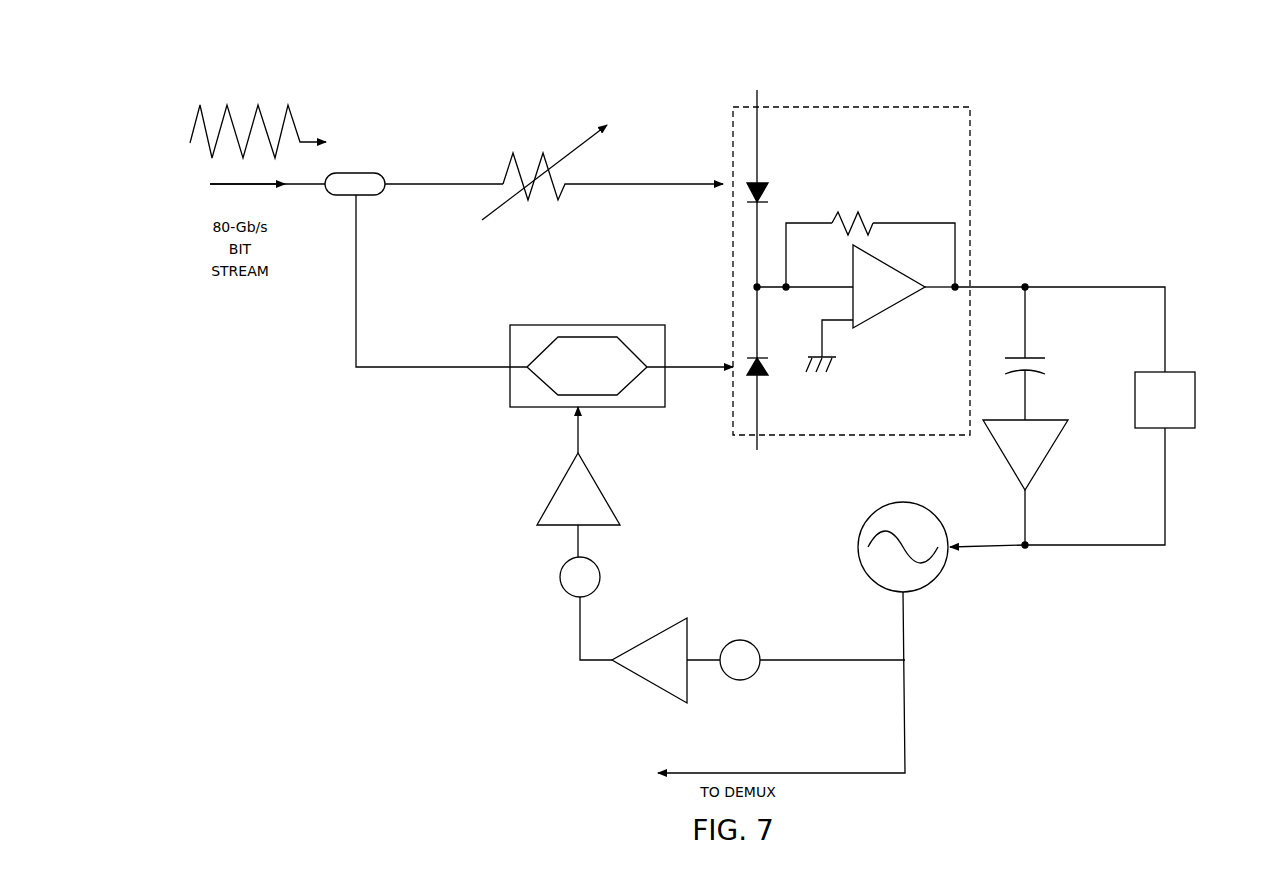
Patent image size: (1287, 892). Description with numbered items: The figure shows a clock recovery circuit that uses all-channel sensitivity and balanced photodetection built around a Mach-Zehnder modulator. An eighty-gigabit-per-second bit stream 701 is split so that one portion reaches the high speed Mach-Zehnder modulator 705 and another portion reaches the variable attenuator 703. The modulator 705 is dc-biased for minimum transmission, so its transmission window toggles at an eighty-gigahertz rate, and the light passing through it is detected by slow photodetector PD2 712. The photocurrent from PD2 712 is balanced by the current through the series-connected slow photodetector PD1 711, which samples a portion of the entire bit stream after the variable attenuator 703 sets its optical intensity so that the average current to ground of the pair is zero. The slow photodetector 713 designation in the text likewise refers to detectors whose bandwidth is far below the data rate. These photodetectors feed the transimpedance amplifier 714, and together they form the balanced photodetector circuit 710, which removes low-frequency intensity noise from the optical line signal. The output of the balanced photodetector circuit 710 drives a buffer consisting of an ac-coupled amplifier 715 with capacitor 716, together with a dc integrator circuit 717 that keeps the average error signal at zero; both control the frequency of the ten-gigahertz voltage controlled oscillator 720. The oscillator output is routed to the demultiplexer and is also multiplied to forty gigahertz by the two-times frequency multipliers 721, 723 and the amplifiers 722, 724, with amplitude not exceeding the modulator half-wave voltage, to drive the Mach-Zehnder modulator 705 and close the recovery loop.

The 80-Gb/s bit stream 701 is at (196, 123).
The variable attenuator 703 is at (500, 148).
The Mach-Zehnder modulator 705 is at (535, 410).
The balanced photodetector circuit 710 is at (975, 172).
The photodetector (PD1) 711 is at (778, 183).
The photodetector (PD2) 712 is at (780, 385).
The slow photodetector 713 is at (860, 190).
The transimpedance amplifier 714 is at (890, 305).
The amplifier 715 is at (1045, 460).
The capacitor 716 is at (1050, 355).
The dc integrator circuit 717 is at (1197, 400).
The voltage controlled oscillator 720 is at (935, 578).
The 2× frequency multiplier 721 is at (745, 640).
The amplifier 722 is at (645, 682).
The 2× frequency multiplier 723 is at (560, 573).
The amplifier 724 is at (603, 490).